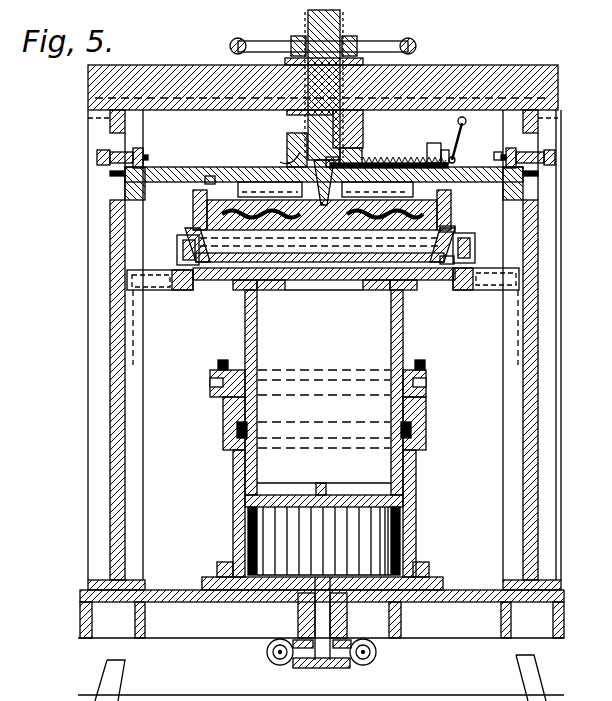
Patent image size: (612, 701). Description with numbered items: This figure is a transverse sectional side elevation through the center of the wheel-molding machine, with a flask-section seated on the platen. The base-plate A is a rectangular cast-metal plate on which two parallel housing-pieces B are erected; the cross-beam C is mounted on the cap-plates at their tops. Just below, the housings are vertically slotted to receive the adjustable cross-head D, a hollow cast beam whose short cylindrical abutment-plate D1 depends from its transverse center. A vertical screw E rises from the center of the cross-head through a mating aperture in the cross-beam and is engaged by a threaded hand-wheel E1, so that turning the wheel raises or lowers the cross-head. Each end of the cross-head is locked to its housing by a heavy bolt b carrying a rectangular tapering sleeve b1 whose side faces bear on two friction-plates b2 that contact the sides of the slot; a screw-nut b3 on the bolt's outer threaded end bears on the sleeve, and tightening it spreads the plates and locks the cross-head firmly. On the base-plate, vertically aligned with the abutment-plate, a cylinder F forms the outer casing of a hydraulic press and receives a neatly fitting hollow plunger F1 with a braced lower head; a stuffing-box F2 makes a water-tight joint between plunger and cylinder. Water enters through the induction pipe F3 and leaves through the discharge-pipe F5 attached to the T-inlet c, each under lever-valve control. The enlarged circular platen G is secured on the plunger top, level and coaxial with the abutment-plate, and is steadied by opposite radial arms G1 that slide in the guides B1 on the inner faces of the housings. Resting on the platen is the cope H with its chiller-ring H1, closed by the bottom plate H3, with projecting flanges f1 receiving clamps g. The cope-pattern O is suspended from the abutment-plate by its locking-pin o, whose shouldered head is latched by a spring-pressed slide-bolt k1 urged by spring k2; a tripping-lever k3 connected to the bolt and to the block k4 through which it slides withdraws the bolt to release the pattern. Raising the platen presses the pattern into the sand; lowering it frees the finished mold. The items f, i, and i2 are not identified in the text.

The base-plate A is at (321, 614).
The housing-piece B is at (100, 413).
The guide B1 is at (138, 353).
The cross-beam C is at (494, 66).
The cross-head D is at (200, 168).
The abutment-plate D1 is at (200, 192).
The vertical screw E is at (342, 18).
The hand-wheel E1 is at (417, 47).
The cylinder F is at (417, 490).
The plunger F1 is at (404, 342).
The stuffing-box F2 is at (426, 423).
The water-induction pipe F3 is at (376, 653).
The discharge-pipe F5 is at (267, 655).
The platen G is at (323, 290).
The radial arm G1 is at (167, 290).
The cope H is at (314, 245).
The chiller-ring H1 is at (455, 209).
The bottom plate H3 is at (230, 270).
The cope-pattern O is at (205, 221).
The bolt b is at (149, 159).
The sleeve b1 is at (133, 150).
The friction-plate b2 is at (110, 148).
The screw-nut b3 is at (97, 162).
The T-inlet c is at (322, 634).
The pan lug f is at (480, 262).
The projecting flange f1 is at (466, 230).
The clamp g is at (177, 252).
The pin i is at (209, 176).
The pin i2 is at (494, 158).
The slide-bolt k1 is at (361, 160).
The spring k2 is at (388, 163).
The tripping-lever k3 is at (467, 121).
The block k4 is at (433, 143).
The locking-pin o is at (298, 156).